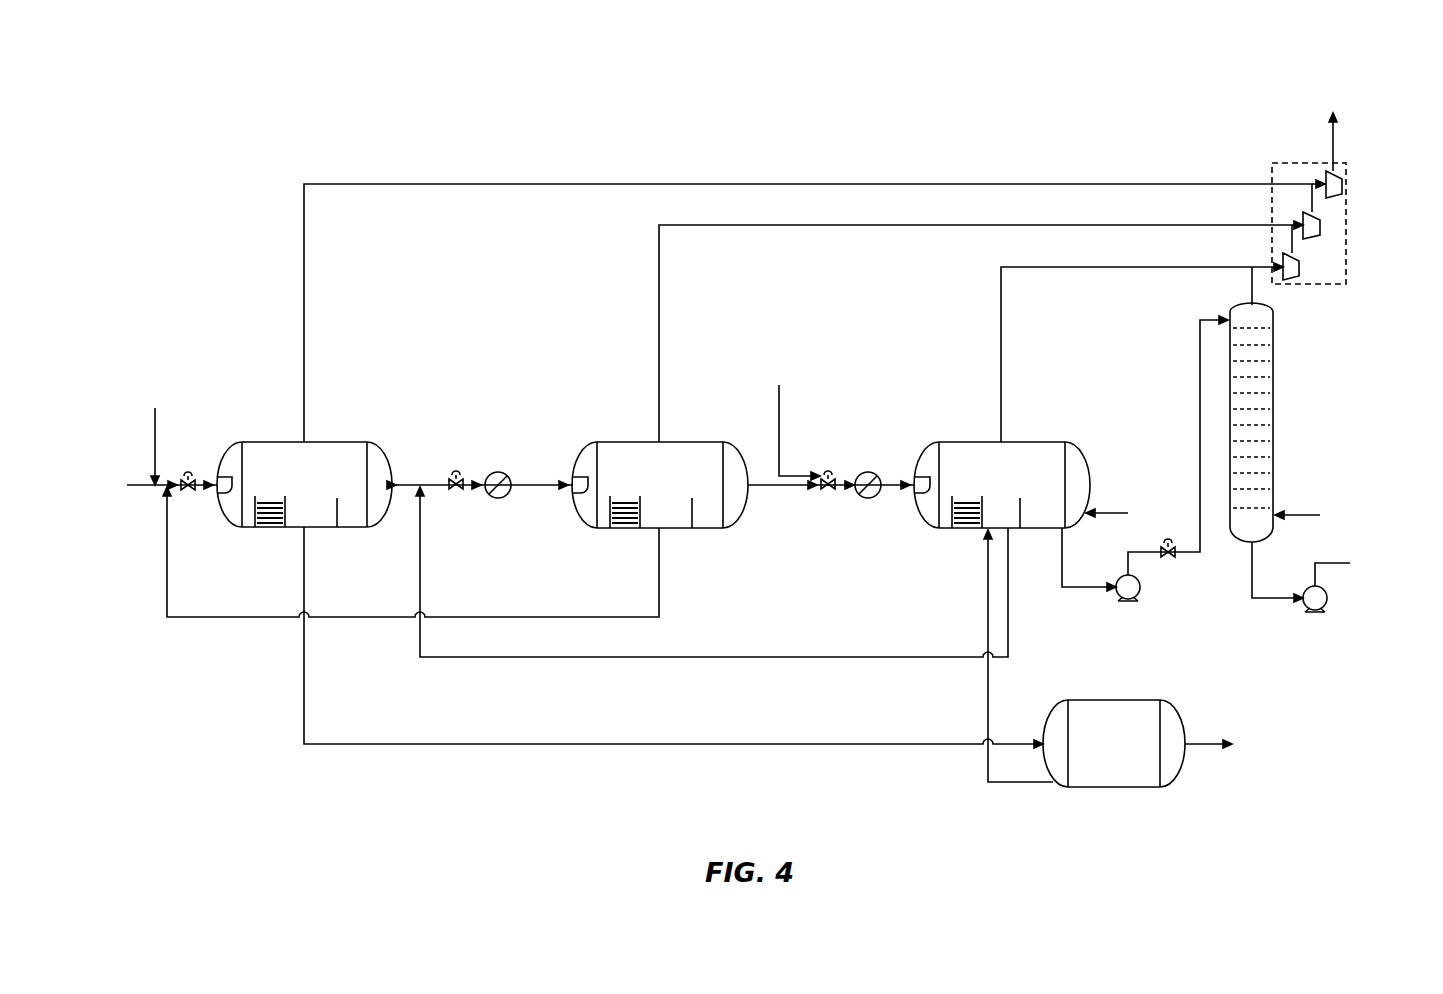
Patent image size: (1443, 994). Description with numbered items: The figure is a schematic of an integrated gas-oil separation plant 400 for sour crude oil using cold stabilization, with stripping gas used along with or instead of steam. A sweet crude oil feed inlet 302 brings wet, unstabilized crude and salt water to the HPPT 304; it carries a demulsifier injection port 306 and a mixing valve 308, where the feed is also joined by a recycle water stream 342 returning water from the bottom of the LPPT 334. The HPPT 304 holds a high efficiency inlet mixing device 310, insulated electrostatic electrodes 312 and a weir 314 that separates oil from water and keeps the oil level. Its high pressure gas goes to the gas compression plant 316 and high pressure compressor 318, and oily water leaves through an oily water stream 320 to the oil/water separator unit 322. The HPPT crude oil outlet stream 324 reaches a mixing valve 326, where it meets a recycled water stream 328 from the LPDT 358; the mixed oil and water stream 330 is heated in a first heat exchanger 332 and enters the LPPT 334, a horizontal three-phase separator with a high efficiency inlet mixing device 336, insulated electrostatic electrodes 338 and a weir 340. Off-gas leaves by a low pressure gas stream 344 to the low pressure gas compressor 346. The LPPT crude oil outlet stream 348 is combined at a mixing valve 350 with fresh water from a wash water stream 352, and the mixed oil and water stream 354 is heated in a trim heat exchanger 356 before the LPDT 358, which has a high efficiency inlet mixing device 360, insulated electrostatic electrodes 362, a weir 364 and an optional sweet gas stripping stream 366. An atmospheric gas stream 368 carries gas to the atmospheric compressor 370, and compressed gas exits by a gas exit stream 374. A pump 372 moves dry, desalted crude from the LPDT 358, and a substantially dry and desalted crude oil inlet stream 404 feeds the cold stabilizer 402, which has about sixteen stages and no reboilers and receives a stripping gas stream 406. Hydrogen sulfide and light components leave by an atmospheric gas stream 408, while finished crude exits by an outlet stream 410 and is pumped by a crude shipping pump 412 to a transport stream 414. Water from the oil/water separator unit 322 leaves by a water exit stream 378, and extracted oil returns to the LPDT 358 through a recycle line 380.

The process system 400 is at (984, 118).
The sweet crude oil feed inlet 302 is at (127, 486).
The HPPT 304 is at (332, 484).
The demulsifier injection port 306 is at (153, 422).
The mixing valve 308 is at (189, 475).
The high efficiency inlet mixing device 310 is at (217, 488).
The insulated electrostatic electrodes 312 is at (269, 528).
The weir 314 is at (340, 522).
The gas compression plant 316 is at (1305, 163).
The high pressure compressor 318 is at (1340, 196).
The oily water stream 320 is at (304, 692).
The oil/water separator unit 322 is at (1139, 762).
The HPPT crude oil outlet stream 324 is at (413, 484).
The mixing valve 326 is at (456, 474).
The recycled water stream 328 is at (725, 657).
The mixed oil and water stream 330 is at (473, 484).
The first heat exchanger 332 is at (498, 499).
The LPPT 334 is at (689, 484).
The high efficiency inlet mixing device 336 is at (574, 495).
The insulated electrostatic electrodes 338 is at (626, 529).
The weir 340 is at (694, 520).
The recycle water stream 342 is at (507, 616).
The low pressure gas stream 344 is at (705, 226).
The low pressure gas compressor 346 is at (1322, 236).
The LPPT crude oil outlet stream 348 is at (758, 488).
The mixing valve 350 is at (826, 473).
The wash water stream 352 is at (779, 400).
The mixed oil and water stream 354 is at (843, 484).
The trim heat exchanger 356 is at (868, 499).
The LPDT 358 is at (1034, 484).
The high efficiency inlet mixing device 360 is at (916, 491).
The insulated electrostatic electrodes 362 is at (969, 529).
The weir 364 is at (1021, 500).
The sweet gas stripping stream 366 is at (1105, 513).
The atmospheric gas stream 368 is at (1045, 268).
The atmospheric compressor 370 is at (1293, 281).
The pump 372 is at (1128, 600).
The gas exit stream 374 is at (1336, 128).
The water exit stream 378 is at (1222, 744).
The recycle line 380 is at (988, 766).
The cold stabilizer 402 is at (1274, 413).
The substantially dry and desalted crude oil inlet stream 404 is at (1200, 361).
The stripping gas stream 406 is at (1293, 515).
The atmospheric gas stream 408 is at (1251, 286).
The outlet stream 410 is at (1252, 578).
The crude shipping pump 412 is at (1318, 611).
The transport stream 414 is at (1333, 563).